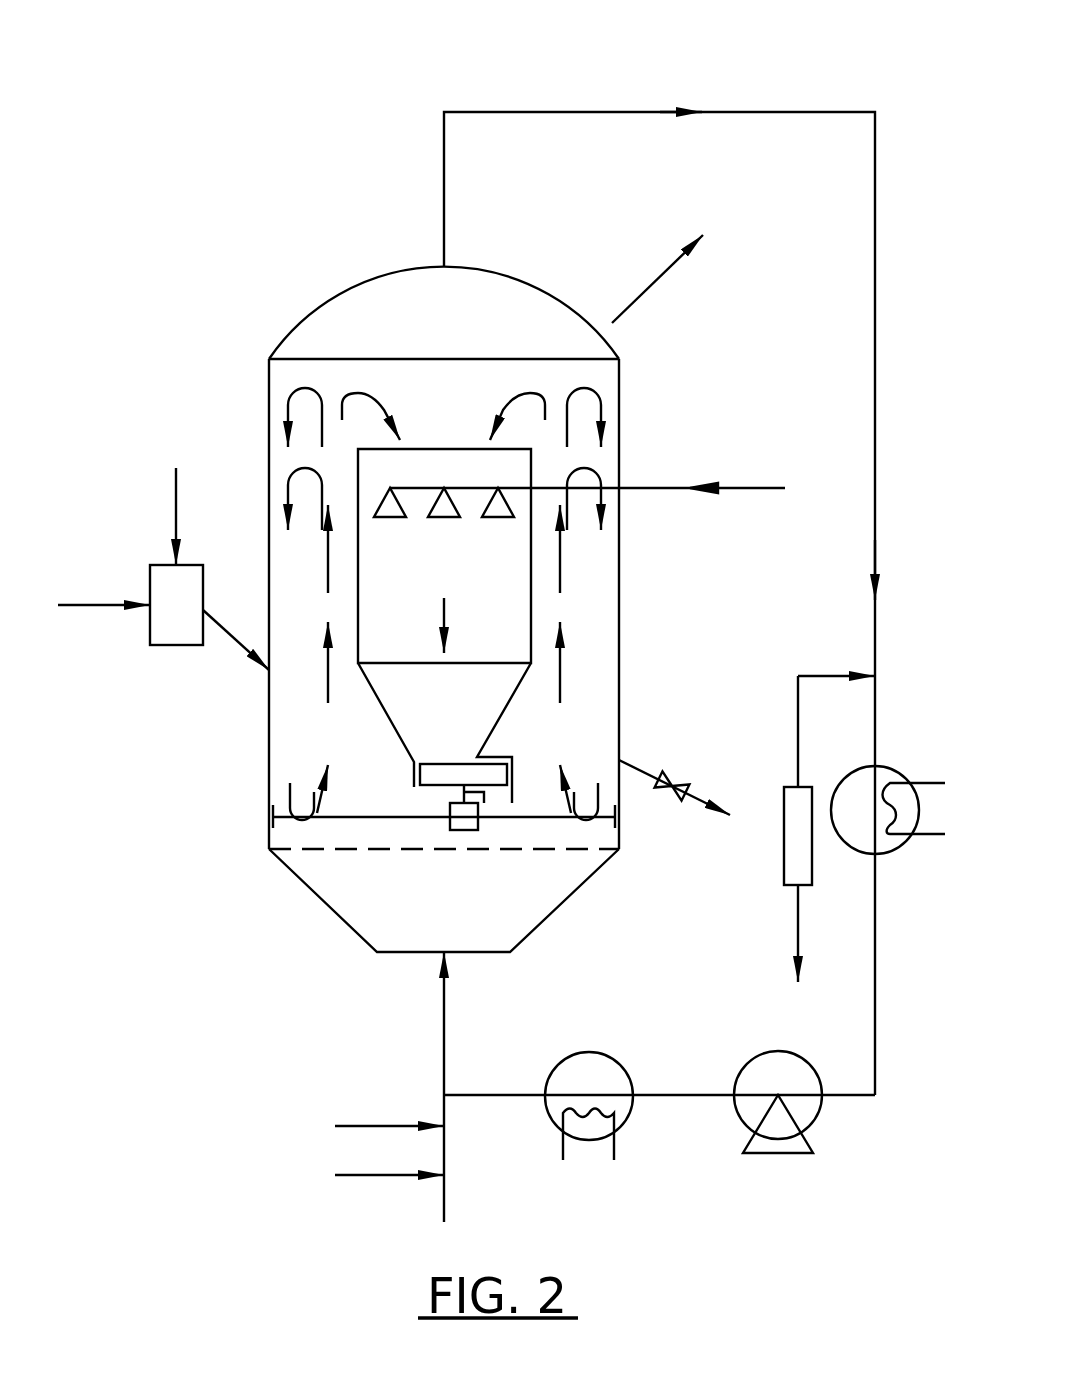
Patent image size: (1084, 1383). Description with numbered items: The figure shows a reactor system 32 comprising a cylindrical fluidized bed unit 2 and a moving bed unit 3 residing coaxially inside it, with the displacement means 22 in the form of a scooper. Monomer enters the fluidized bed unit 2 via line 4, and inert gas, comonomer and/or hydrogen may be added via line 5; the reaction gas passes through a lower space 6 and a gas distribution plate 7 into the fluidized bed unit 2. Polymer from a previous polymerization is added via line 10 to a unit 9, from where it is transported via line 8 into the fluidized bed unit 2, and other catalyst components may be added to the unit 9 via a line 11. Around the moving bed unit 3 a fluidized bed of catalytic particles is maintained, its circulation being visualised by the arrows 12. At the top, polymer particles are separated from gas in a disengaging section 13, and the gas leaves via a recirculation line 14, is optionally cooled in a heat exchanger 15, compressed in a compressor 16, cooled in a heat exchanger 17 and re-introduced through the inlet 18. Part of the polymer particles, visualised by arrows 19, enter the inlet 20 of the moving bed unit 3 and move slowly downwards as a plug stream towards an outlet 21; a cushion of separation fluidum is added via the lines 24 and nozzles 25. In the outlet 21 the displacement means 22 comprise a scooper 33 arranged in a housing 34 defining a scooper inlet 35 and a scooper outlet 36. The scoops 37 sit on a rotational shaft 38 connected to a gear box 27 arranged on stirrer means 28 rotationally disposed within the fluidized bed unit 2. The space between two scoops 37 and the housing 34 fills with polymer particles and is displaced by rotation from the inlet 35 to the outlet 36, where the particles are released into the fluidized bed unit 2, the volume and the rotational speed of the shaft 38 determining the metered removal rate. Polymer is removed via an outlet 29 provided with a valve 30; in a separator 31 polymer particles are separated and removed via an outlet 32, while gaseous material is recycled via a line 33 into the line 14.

The fluidized bed unit 2 is at (620, 394).
The moving bed unit 3 is at (531, 600).
The line 4 is at (352, 1126).
The line 5 is at (352, 1175).
The lower space 6 is at (340, 899).
The gas distribution plate 7 is at (385, 849).
The line 8 is at (230, 635).
The unit 9 is at (177, 635).
The line 10 is at (176, 482).
The line 11 is at (90, 605).
The arrows 12 is at (533, 887).
The disengaging section 13 is at (373, 292).
The recirculation line 14 is at (767, 112).
The heat exchanger 15 is at (890, 777).
The compressor 16 is at (748, 1073).
The heat exchanger 17 is at (585, 1050).
The inlet 18 is at (444, 1010).
The arrows 19 is at (520, 395).
The inlet 20 is at (444, 449).
The outlet 21 is at (418, 764).
The displacement means 22 is at (413, 768).
The lines 24 is at (652, 487).
The nozzles 25 is at (498, 518).
The gear box 27 is at (464, 830).
The stirrer means 28 is at (347, 860).
The outlet 29 is at (640, 770).
The valve 30 is at (665, 800).
The separator 31 is at (789, 845).
The reactor system 32 is at (797, 920).
The scooper 33 is at (507, 753).
The housing 34 is at (420, 792).
The scooper inlet 35 is at (455, 758).
The scooper outlet 36 is at (500, 800).
The scoops 37 is at (495, 773).
The rotational shaft 38 is at (460, 797).